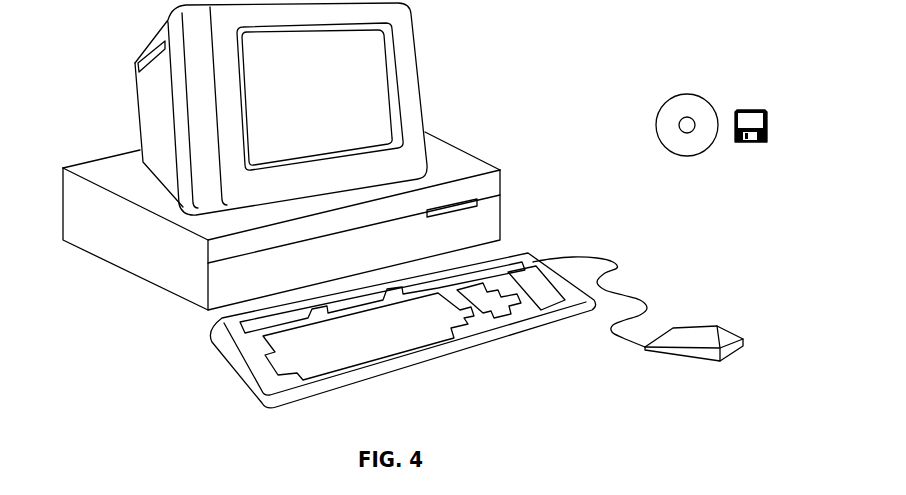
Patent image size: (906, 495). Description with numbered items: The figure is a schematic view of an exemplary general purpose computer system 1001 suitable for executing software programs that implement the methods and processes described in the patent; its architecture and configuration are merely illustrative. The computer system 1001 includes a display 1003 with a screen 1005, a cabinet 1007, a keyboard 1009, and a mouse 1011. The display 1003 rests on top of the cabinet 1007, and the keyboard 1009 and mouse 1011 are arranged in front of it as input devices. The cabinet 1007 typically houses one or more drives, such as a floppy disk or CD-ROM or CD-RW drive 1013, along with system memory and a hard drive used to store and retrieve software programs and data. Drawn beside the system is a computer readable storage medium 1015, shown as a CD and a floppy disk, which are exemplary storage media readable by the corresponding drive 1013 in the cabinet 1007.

The computer system 1001 is at (598, 35).
The display 1003 is at (422, 108).
The screen 1005 is at (387, 53).
The cabinet 1007 is at (170, 292).
The keyboard 1009 is at (407, 367).
The mouse 1011 is at (733, 328).
The drive 1013 is at (477, 200).
The computer readable storage medium 1015 is at (724, 86).